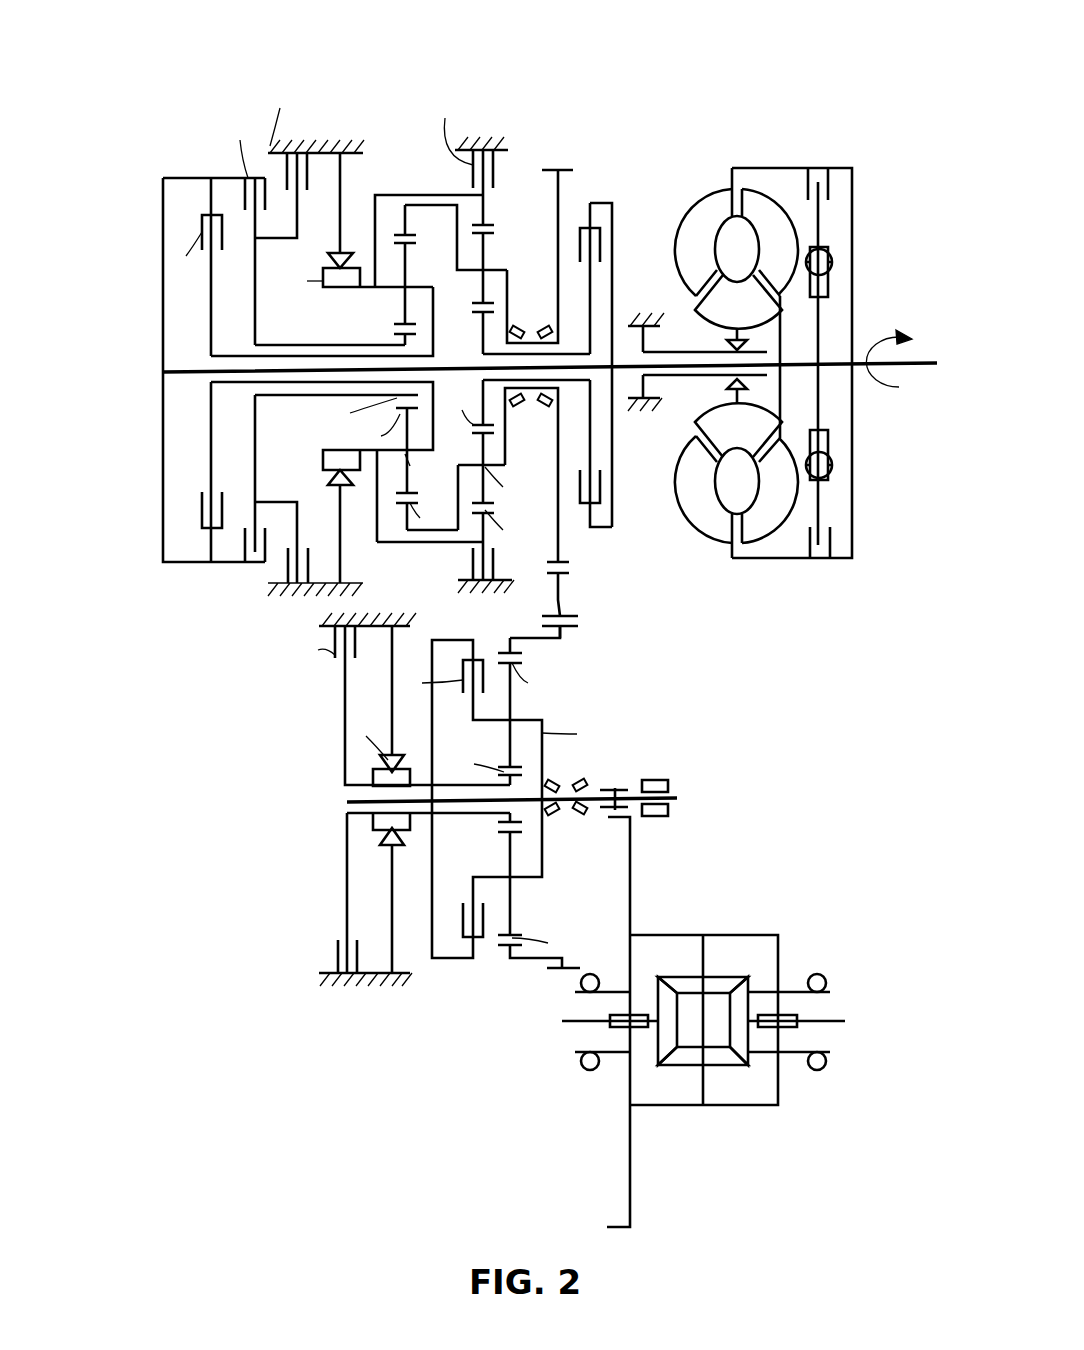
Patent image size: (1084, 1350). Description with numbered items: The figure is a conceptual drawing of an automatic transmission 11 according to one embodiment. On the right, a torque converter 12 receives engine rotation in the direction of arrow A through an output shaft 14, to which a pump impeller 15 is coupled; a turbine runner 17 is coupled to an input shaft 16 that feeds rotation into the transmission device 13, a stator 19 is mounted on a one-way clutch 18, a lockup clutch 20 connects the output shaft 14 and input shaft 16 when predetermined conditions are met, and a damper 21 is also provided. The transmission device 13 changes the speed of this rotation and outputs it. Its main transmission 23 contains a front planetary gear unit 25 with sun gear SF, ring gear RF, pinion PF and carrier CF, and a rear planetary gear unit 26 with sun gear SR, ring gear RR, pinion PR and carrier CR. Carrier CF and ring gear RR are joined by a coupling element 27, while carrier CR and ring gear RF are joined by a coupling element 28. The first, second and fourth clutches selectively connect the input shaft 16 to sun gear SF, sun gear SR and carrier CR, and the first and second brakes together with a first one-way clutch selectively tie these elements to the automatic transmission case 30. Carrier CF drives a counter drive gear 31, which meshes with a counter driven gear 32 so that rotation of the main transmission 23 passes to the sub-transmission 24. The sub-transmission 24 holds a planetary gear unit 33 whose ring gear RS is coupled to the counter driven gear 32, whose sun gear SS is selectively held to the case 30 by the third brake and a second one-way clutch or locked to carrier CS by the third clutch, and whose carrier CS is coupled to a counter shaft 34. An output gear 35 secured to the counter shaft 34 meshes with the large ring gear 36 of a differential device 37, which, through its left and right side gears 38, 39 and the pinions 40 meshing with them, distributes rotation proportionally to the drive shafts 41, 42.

The automatic transmission 11 is at (553, 85).
The torque converter 12 is at (800, 135).
The transmission device 13 is at (417, 78).
The output shaft 14 is at (932, 355).
The pump impeller 15 is at (685, 269).
The input shaft 16 is at (620, 368).
The turbine runner 17 is at (765, 269).
The one-way clutch 18 is at (730, 350).
The stator 19 is at (728, 318).
The lockup clutch 20 is at (832, 540).
The damper 21 is at (832, 462).
The main transmission 23 is at (147, 350).
The sub-transmission 24 is at (283, 830).
The front planetary gear unit 25 is at (528, 240).
The rear planetary gear unit 26 is at (433, 240).
The coupling element 27 is at (432, 530).
The coupling element 28 is at (390, 542).
The automatic transmission case 30 is at (348, 140).
The counter drive gear 31 is at (568, 580).
The counter driven gear 32 is at (562, 630).
The planetary gear unit 33 is at (492, 952).
The counter shaft 34 is at (677, 797).
The output gear 35 is at (617, 788).
The large ring gear 36 is at (622, 817).
The differential device 37 is at (728, 888).
The left side gear 38 is at (657, 1045).
The right side gear 39 is at (748, 1050).
The pinions 40 is at (720, 975).
The drive shaft 41 is at (572, 1024).
The drive shaft 42 is at (835, 1024).